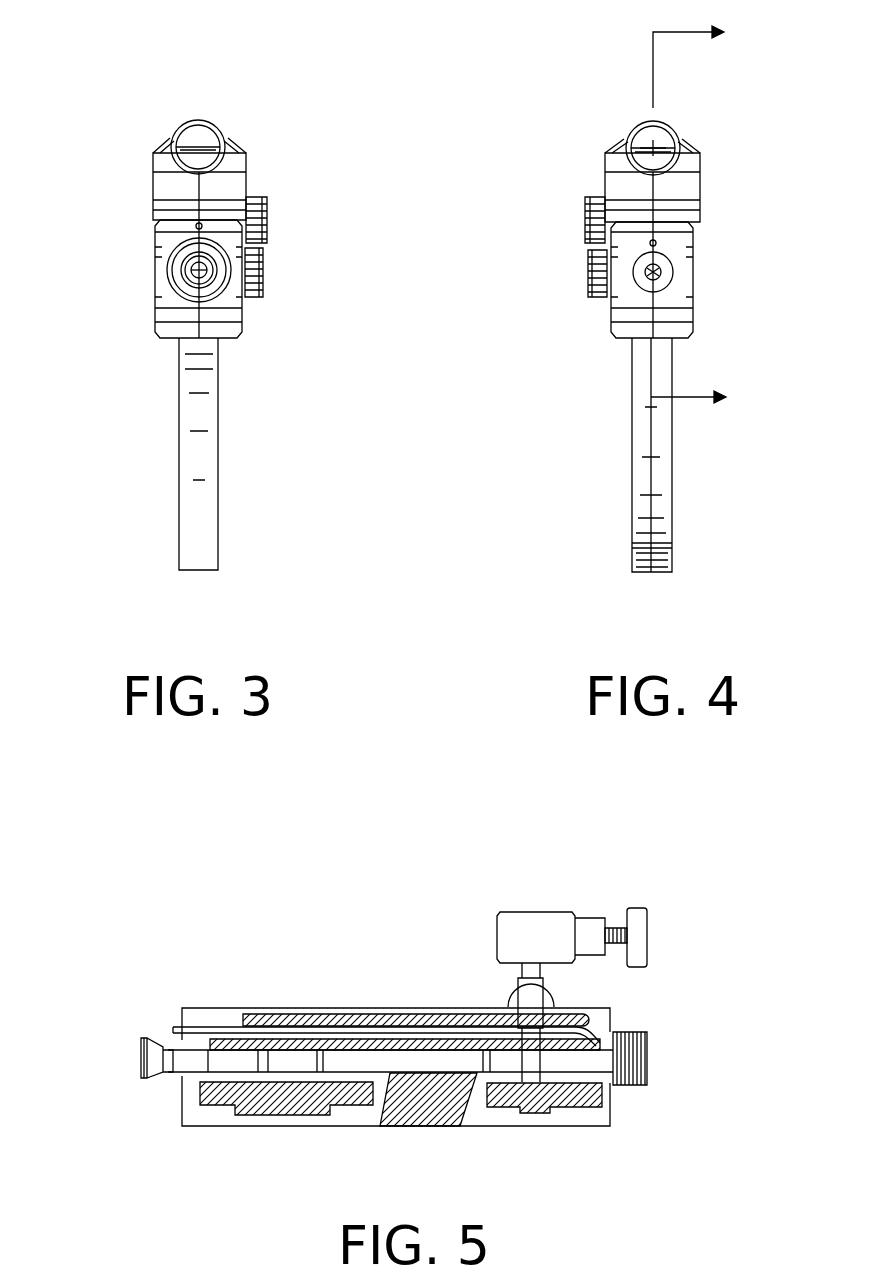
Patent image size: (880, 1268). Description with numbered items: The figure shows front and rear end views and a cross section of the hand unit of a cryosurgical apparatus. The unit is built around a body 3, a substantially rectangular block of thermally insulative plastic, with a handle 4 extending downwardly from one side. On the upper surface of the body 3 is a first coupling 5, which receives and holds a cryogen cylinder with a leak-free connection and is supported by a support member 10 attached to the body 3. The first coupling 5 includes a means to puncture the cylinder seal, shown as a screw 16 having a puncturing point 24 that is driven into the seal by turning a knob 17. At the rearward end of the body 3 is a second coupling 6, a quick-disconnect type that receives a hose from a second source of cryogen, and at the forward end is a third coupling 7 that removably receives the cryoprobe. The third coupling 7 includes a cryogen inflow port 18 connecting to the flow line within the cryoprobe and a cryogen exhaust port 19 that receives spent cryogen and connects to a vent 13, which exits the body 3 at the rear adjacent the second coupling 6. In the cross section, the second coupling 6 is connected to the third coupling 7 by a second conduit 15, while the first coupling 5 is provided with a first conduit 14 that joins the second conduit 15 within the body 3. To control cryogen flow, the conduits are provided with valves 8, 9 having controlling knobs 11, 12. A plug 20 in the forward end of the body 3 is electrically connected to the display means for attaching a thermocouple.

In FIG. 3, the body 3 is at (228, 327).
In FIG. 4, the body 3 is at (680, 325).
In FIG. 5, the body 3 is at (587, 1117).
In FIG. 3, the handle 4 is at (212, 452).
In FIG. 4, the handle 4 is at (664, 445).
In FIG. 4, the first coupling 5 is at (676, 155).
In FIG. 5, the first coupling 5 is at (536, 912).
In FIG. 4, the second coupling 6 is at (674, 272).
In FIG. 5, the second coupling 6 is at (143, 1079).
In FIG. 5, the third coupling 7 is at (648, 1033).
In FIG. 5, the valve 8 is at (533, 997).
In FIG. 5, the valve 9 is at (287, 1065).
In FIG. 3, the support member 10 is at (236, 182).
In FIG. 4, the support member 10 is at (690, 188).
In FIG. 3, the controlling knob 11 is at (268, 210).
In FIG. 4, the controlling knob 11 is at (584, 212).
In FIG. 5, the controlling knob 11 is at (515, 998).
In FIG. 3, the controlling knob 12 is at (265, 272).
In FIG. 4, the controlling knob 12 is at (588, 272).
In FIG. 4, the vent 13 is at (660, 242).
In FIG. 5, the vent 13 is at (364, 1031).
In FIG. 5, the first conduit 14 is at (522, 972).
In FIG. 5, the second conduit 15 is at (393, 1060).
In FIG. 5, the screw 16 is at (620, 928).
In FIG. 3, the knob 17 is at (207, 127).
In FIG. 4, the knob 17 is at (670, 128).
In FIG. 5, the knob 17 is at (637, 932).
In FIG. 3, the cryogen inflow port 18 is at (194, 271).
In FIG. 3, the cryogen exhaust port 19 is at (178, 250).
In FIG. 3, the plug 20 is at (198, 225).
In FIG. 4, the puncturing point 24 is at (650, 148).